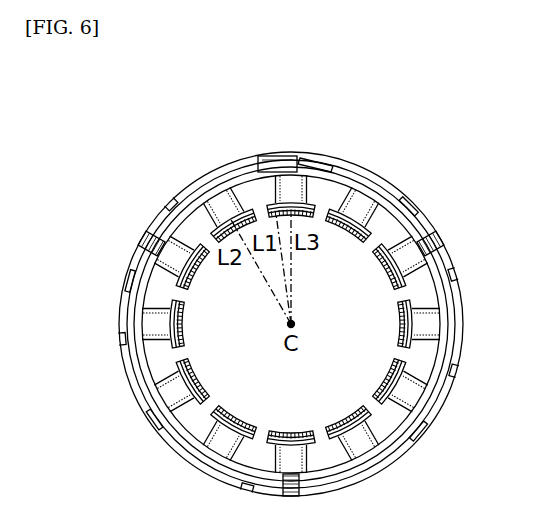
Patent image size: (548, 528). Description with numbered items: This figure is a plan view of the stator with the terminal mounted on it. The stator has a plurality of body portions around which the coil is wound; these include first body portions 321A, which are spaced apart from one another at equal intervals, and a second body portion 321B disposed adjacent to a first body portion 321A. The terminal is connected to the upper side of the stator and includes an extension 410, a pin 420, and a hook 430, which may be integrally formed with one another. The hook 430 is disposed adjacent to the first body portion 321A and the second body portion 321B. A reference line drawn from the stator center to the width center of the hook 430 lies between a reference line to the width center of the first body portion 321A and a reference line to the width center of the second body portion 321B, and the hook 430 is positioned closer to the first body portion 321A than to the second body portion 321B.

The extension 410 is at (350, 165).
The pin 420 is at (443, 231).
The hook 430 is at (262, 150).
The first body portion 321A is at (215, 176).
The second body portion 321B is at (287, 188).